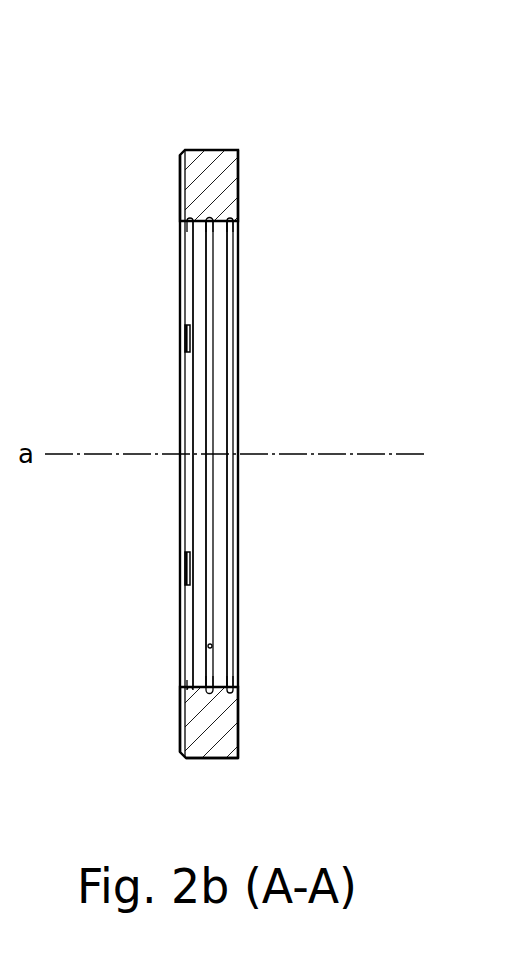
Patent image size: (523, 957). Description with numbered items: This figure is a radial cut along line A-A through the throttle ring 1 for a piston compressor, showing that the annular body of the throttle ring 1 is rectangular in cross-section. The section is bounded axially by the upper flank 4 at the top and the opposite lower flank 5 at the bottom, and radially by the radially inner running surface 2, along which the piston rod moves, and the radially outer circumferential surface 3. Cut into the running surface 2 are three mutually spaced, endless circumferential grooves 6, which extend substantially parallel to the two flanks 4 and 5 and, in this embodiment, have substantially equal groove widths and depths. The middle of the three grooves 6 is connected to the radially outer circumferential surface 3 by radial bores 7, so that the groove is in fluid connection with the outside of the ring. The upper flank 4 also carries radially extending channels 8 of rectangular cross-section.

The throttle ring 1 is at (110, 104).
The radially inner running surface 2 is at (218, 240).
The radially outer circumferential surface 3 is at (214, 760).
The upper flank 4 is at (182, 170).
The lower flank 5 is at (238, 724).
The grooves 6 is at (228, 280).
The radial bores 7 is at (208, 646).
The channels 8 is at (182, 210).